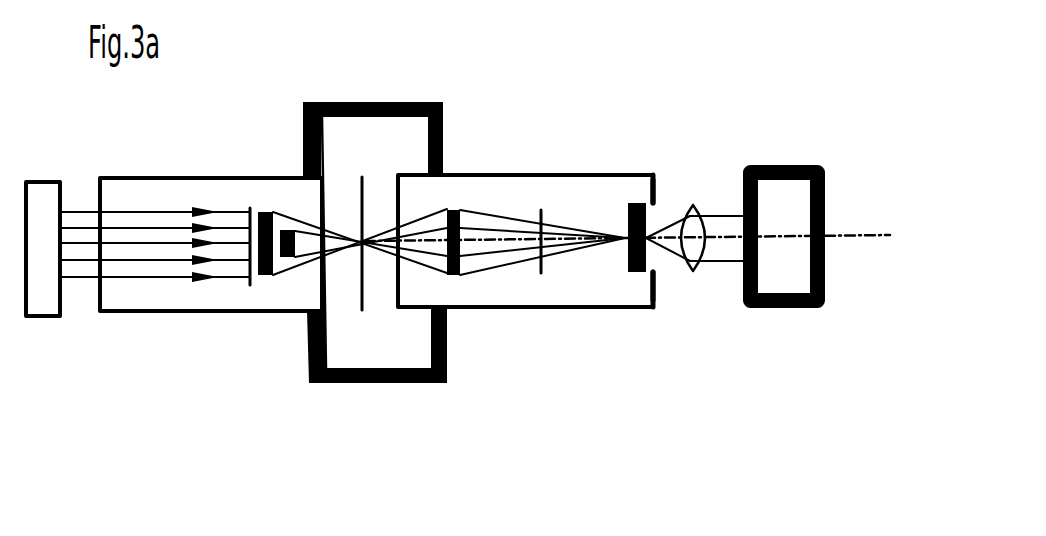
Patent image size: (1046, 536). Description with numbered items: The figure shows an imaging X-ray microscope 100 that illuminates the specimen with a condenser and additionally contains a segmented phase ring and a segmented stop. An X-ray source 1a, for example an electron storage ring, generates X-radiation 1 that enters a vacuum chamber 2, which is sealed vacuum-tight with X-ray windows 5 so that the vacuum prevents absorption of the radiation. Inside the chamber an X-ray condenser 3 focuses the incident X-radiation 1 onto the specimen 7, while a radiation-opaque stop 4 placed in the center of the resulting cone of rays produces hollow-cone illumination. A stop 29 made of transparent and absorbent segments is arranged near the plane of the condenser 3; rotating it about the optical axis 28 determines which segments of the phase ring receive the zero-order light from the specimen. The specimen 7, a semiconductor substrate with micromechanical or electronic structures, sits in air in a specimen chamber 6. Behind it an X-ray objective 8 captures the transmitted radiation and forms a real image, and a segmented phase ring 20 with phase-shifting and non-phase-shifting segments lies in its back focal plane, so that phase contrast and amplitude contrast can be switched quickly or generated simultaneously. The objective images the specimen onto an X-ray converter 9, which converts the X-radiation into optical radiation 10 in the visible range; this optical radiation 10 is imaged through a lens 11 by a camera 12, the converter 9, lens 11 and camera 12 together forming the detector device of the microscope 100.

The X-ray source 1a is at (42, 178).
The X-ray windows 5 is at (95, 272).
The X-radiation 1 is at (138, 257).
The vacuum chamber 2 is at (236, 313).
The stop 29 is at (256, 287).
The X-ray condenser 3 is at (255, 205).
The radiation-opaque stop 4 is at (287, 225).
The specimen chamber 6 is at (317, 100).
The specimen 7 is at (358, 173).
The X-ray objective 8 is at (433, 200).
The segmented phase ring 20 is at (549, 272).
The X-ray converter 9 is at (625, 222).
The optical radiation 10 is at (672, 212).
The lens 11 is at (699, 212).
The camera 12 is at (765, 153).
The optical axis 28 is at (853, 232).
The X-ray microscope 100 is at (577, 377).